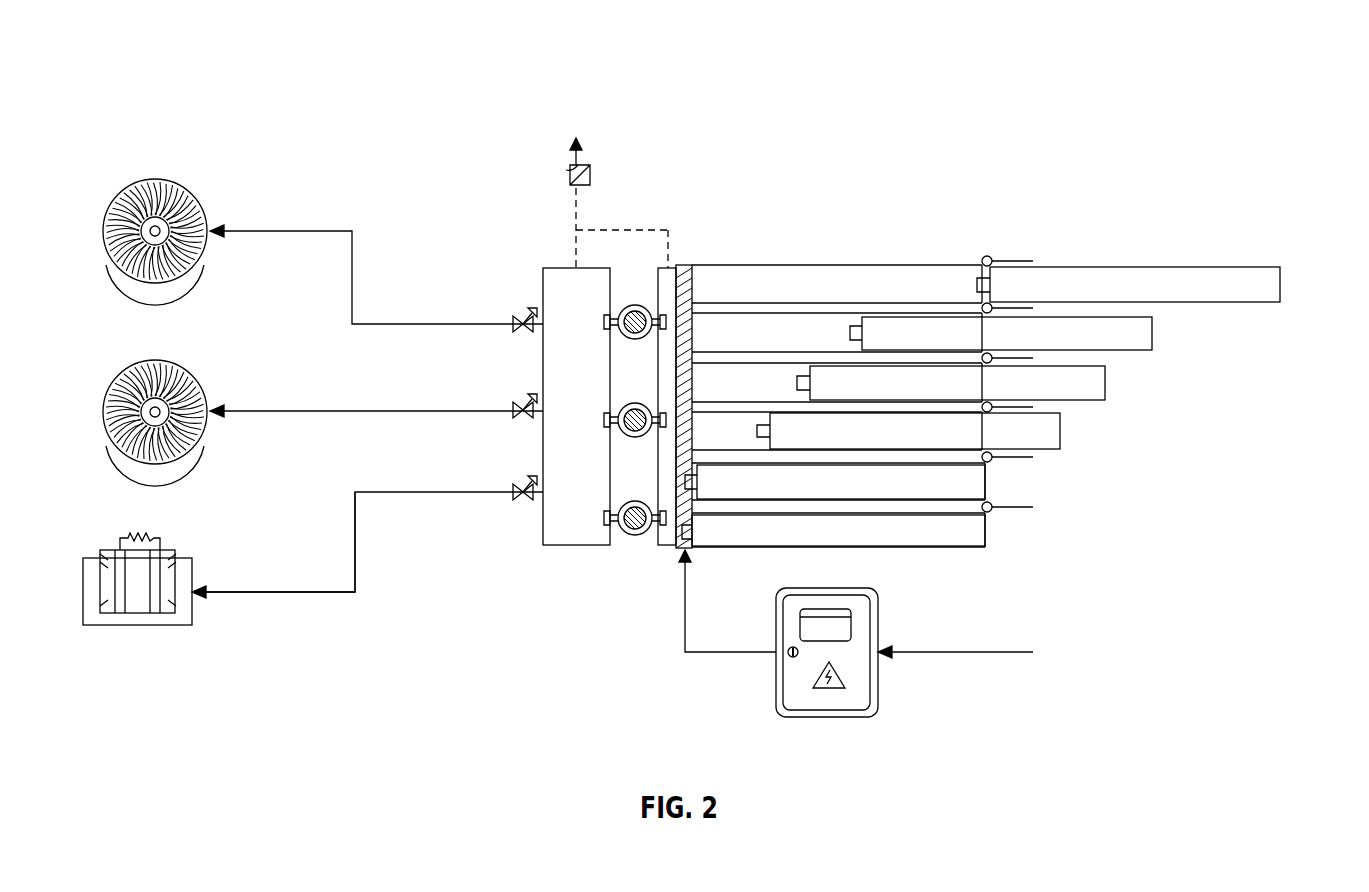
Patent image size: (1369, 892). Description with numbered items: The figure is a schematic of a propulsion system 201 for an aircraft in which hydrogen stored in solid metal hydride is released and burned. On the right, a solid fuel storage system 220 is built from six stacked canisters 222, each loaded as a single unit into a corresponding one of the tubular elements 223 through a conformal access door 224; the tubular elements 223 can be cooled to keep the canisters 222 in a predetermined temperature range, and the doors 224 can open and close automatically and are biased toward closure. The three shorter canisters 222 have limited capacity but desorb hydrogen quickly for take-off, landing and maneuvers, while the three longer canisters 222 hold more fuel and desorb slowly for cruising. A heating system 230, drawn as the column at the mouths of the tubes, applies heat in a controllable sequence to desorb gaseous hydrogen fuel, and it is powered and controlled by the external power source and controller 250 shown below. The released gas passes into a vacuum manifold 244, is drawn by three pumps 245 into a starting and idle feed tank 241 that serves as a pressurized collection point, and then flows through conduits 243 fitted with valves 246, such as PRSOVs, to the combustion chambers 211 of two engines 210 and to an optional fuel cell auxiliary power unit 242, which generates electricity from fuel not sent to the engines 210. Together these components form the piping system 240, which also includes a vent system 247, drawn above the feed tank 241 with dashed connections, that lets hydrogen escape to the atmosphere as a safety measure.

The propulsion system 201 is at (157, 88).
The engine 210 is at (124, 190).
The combustion chamber 211 is at (138, 303).
The solid fuel storage system 220 is at (952, 553).
The canisters 222 is at (1278, 290).
The tubular elements 223 is at (798, 264).
The conformal access doors 224 is at (1007, 259).
The heating system 230 is at (688, 265).
The piping system 240 is at (350, 595).
The starting and idle feed tank 241 is at (578, 546).
The fuel cell auxiliary power unit 242 is at (140, 627).
The conduits 243 is at (430, 326).
The vacuum manifold 244 is at (668, 547).
The pumps 245 is at (619, 312).
The valves 246 is at (515, 317).
The vent system 247 is at (570, 188).
The external power source and controller 250 is at (870, 685).